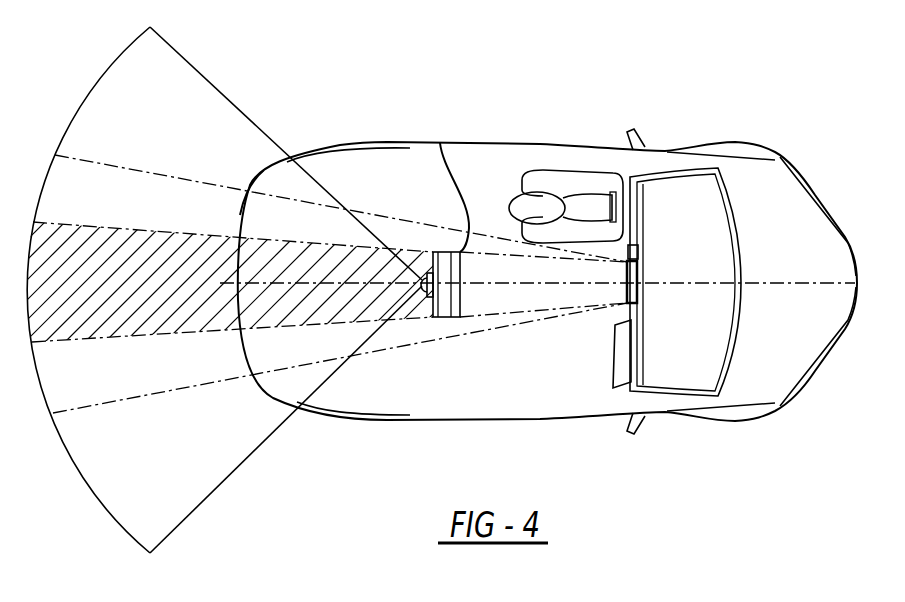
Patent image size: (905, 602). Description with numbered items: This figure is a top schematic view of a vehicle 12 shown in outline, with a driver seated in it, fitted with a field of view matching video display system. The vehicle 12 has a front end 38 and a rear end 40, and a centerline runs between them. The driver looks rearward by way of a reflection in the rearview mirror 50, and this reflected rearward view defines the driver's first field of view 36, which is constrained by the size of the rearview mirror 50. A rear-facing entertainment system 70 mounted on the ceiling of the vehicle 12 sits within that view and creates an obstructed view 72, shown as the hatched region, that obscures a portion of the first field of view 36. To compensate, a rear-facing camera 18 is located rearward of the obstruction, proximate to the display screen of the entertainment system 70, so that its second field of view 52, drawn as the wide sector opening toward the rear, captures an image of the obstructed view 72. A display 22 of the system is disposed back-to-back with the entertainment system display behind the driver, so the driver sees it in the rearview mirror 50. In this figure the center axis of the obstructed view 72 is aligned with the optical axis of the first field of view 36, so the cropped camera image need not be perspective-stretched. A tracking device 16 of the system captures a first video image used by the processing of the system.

The vehicle 12 is at (743, 143).
The tracking device 16 is at (636, 251).
The rear-facing camera 18 is at (427, 297).
The display 22 is at (440, 143).
The first field of view 36 is at (147, 172).
The front end 38 is at (838, 209).
The rear end 40 is at (253, 180).
The rearview mirror 50 is at (632, 293).
The second field of view 52 is at (210, 82).
The rear-facing entertainment system 70 is at (443, 317).
The obstructed view 72 is at (120, 300).